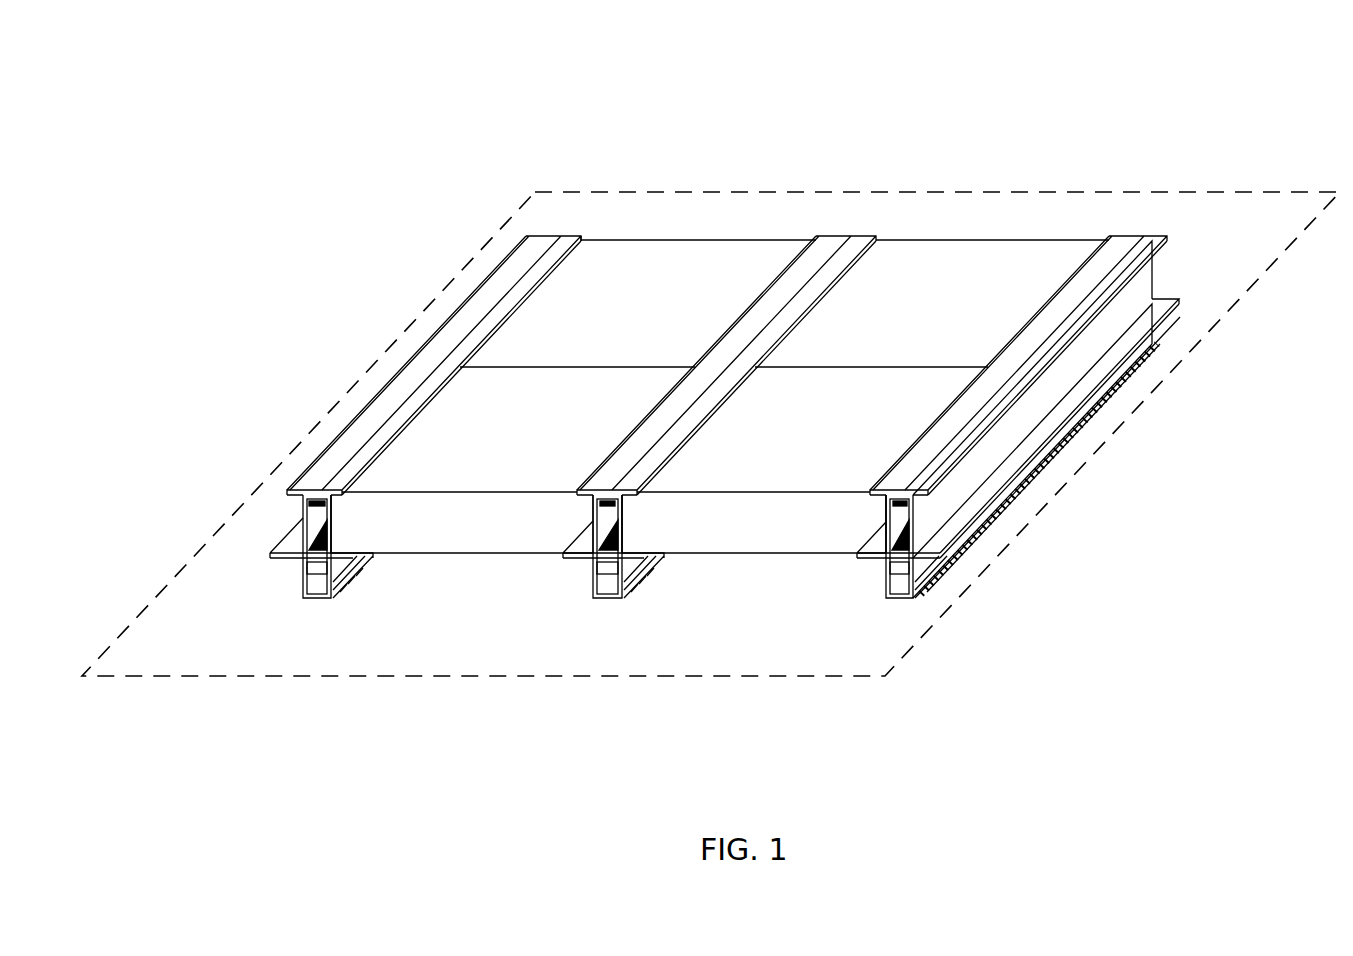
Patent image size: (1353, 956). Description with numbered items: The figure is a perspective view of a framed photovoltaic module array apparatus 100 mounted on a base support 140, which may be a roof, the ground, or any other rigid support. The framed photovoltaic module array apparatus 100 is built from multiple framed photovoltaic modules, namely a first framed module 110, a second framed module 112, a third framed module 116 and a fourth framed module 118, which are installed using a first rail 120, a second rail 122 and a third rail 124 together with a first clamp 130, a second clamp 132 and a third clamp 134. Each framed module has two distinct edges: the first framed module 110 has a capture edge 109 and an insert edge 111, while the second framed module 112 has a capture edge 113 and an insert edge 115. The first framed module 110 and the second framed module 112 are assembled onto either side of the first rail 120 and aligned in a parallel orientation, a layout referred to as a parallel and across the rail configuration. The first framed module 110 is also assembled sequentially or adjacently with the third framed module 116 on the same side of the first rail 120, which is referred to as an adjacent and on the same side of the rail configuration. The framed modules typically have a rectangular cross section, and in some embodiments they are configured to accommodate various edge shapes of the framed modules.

The framed photovoltaic module array apparatus 100 is at (428, 112).
The capture edge 109 is at (872, 525).
The first framed module 110 is at (765, 523).
The insert edge 111 is at (640, 525).
The second framed module 112 is at (455, 525).
The capture edge 113 is at (582, 535).
The insert edge 115 is at (345, 528).
The third framed module 116 is at (962, 268).
The fourth framed module 118 is at (655, 268).
The first rail 120 is at (615, 592).
The second rail 122 is at (908, 578).
The third rail 124 is at (300, 590).
The first clamp 130 is at (637, 442).
The second clamp 132 is at (920, 452).
The third clamp 134 is at (330, 458).
The base support 140 is at (1246, 241).